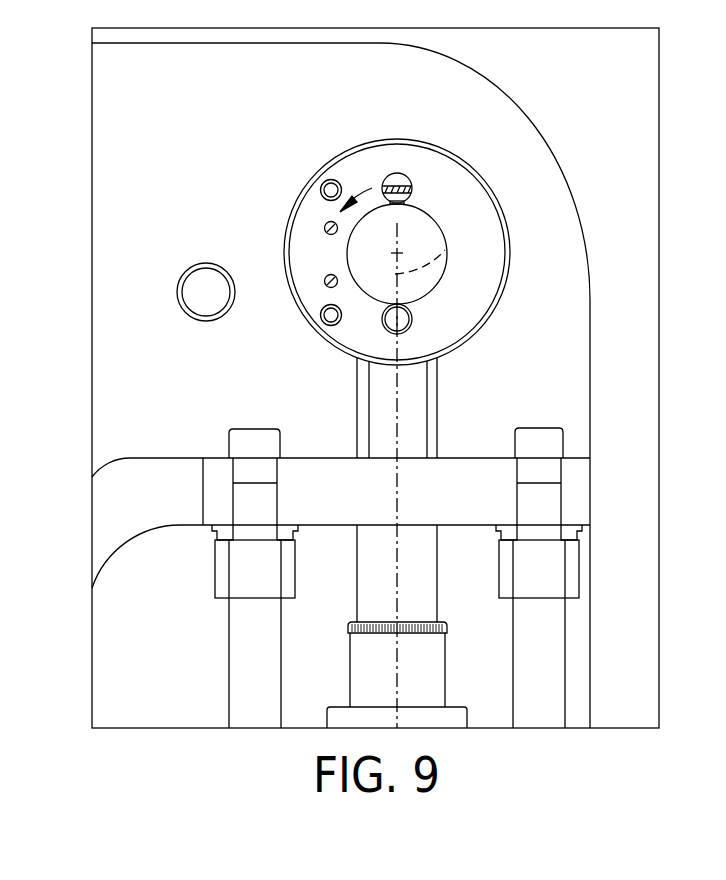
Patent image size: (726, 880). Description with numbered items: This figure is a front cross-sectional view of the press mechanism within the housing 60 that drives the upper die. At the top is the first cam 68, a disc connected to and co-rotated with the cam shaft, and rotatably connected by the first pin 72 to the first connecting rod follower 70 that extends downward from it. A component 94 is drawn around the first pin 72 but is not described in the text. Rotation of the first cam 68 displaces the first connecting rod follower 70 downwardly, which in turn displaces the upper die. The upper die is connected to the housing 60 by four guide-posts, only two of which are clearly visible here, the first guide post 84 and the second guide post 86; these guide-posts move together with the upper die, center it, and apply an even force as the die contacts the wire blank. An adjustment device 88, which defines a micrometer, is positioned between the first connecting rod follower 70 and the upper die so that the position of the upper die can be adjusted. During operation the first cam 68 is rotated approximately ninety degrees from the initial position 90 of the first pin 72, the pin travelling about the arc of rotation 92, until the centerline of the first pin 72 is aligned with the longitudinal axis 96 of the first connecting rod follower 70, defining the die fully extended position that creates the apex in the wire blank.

The housing 60 is at (535, 183).
The first cam 68 is at (418, 162).
The first connecting rod follower 70 is at (415, 595).
The first pin 72 is at (410, 328).
The first guide post 84 is at (255, 705).
The second guide post 86 is at (540, 712).
The adjustment device 88 is at (363, 661).
The initial position 90 is at (392, 174).
The arc of rotation 92 is at (372, 188).
The bushing 94 is at (411, 309).
The longitudinal axis 96 is at (448, 252).